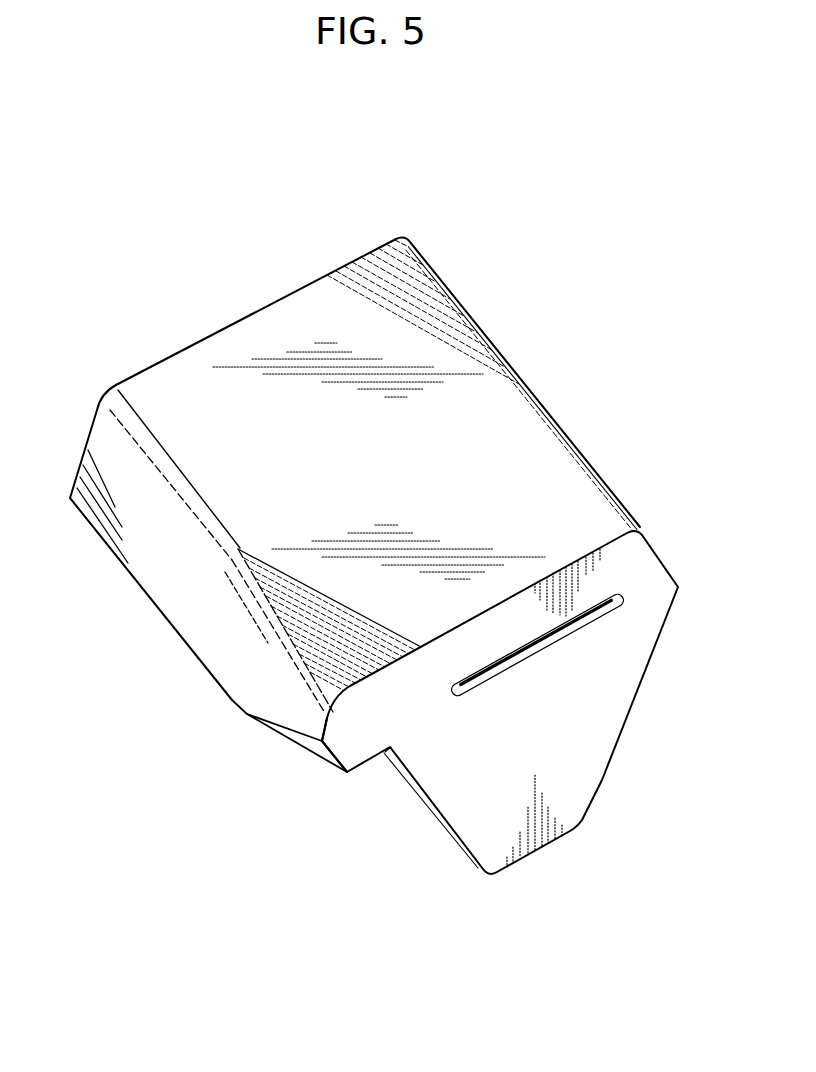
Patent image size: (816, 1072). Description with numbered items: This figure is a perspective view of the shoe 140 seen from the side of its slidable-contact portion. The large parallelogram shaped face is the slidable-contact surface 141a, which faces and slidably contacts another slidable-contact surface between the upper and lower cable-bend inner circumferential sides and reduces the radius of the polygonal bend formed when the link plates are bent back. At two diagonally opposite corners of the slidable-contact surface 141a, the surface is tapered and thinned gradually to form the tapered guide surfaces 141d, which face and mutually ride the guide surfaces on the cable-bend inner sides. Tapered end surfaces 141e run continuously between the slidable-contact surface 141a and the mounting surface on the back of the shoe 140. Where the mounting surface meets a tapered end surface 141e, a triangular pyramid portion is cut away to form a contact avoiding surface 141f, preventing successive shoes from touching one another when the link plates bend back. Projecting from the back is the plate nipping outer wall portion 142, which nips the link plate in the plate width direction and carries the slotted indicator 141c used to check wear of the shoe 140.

The shoe 140 is at (193, 156).
The slidable-contact surface 141a is at (233, 387).
The indicator 141c is at (557, 644).
The tapered guide surfaces 141d is at (382, 273).
The tapered end surfaces 141e is at (183, 605).
The contact avoiding surfaces 141f is at (315, 743).
The plate nipping outer wall portion 142 is at (565, 782).